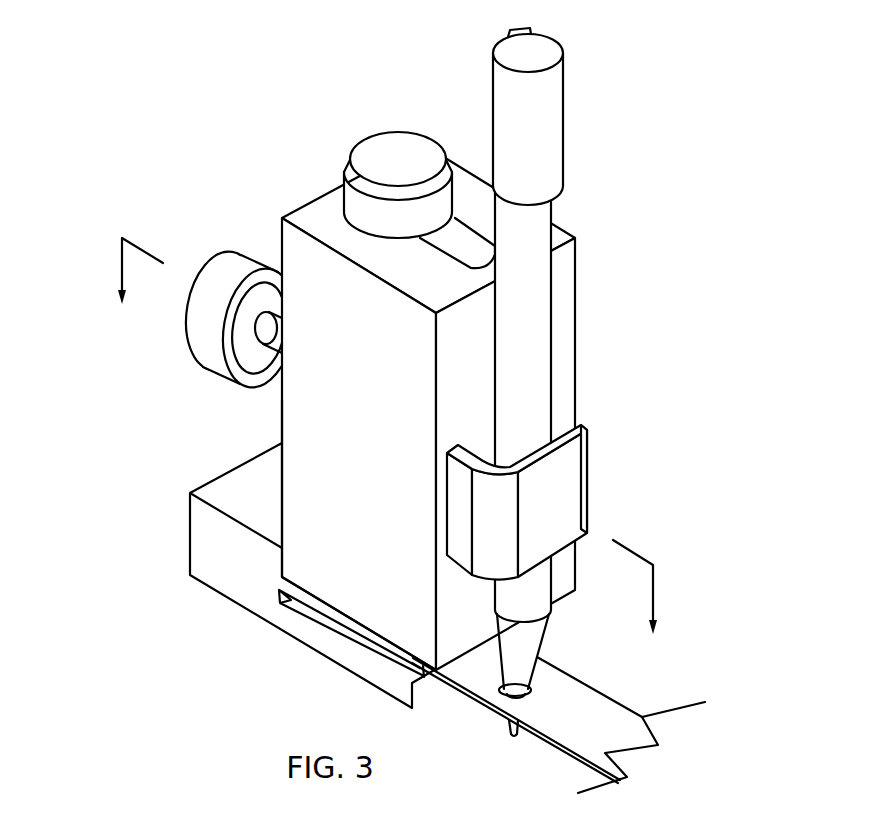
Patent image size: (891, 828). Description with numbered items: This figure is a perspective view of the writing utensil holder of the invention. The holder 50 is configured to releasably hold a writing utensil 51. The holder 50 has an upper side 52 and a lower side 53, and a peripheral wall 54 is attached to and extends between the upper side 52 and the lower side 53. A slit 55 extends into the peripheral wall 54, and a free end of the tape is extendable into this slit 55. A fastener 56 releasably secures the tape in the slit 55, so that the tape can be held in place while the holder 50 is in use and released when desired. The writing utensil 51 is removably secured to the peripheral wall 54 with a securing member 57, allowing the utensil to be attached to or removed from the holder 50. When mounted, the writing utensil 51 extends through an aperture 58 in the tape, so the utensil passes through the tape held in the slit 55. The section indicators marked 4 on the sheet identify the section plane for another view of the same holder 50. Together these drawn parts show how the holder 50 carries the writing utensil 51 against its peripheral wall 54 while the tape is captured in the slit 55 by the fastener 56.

The holder 50 is at (706, 330).
The writing utensil 51 is at (565, 118).
The upper side 52 is at (328, 213).
The lower side 53 is at (298, 643).
The peripheral wall 54 is at (280, 393).
The slit 55 is at (398, 665).
The fastener 56 is at (398, 160).
The securing member 57 is at (220, 282).
The aperture 58 is at (560, 680).
The section line 4- 4 is at (384, 457).